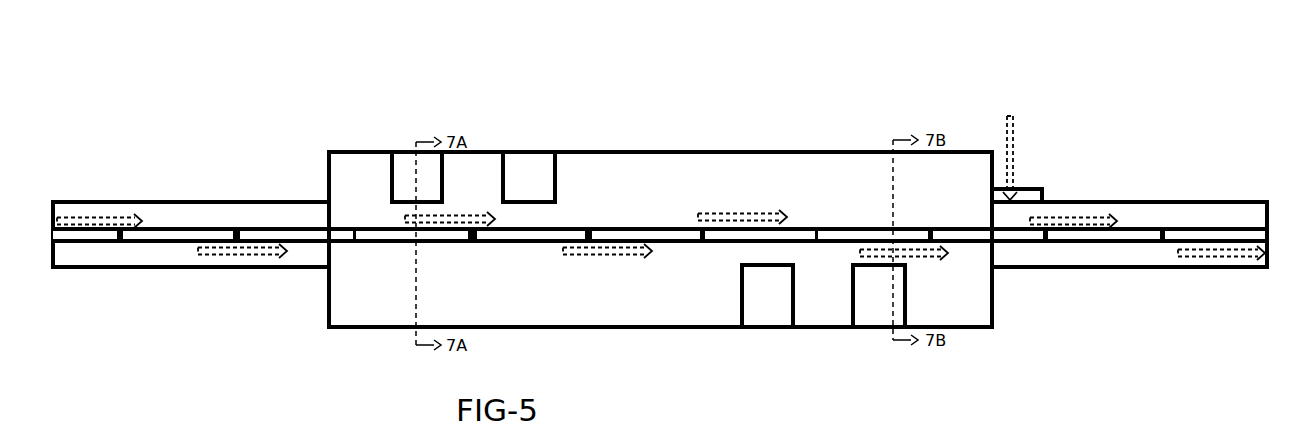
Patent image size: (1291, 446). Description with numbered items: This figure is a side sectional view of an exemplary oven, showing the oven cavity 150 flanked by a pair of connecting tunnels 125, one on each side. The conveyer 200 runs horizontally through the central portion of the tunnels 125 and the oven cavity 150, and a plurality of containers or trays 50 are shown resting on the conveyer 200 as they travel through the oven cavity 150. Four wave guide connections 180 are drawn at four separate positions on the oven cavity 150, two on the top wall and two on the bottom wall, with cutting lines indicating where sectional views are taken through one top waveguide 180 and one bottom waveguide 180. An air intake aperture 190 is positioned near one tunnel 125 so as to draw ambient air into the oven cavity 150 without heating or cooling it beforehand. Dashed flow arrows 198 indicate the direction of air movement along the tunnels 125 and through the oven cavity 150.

The containers or trays 50 is at (386, 202).
The connecting tunnels 125 is at (97, 276).
The oven cavity 150 is at (658, 141).
The wave guide connections 180 is at (400, 151).
The air intake aperture 190 is at (1052, 187).
The fluid flow path 198 is at (90, 204).
The conveyer 200 is at (180, 256).